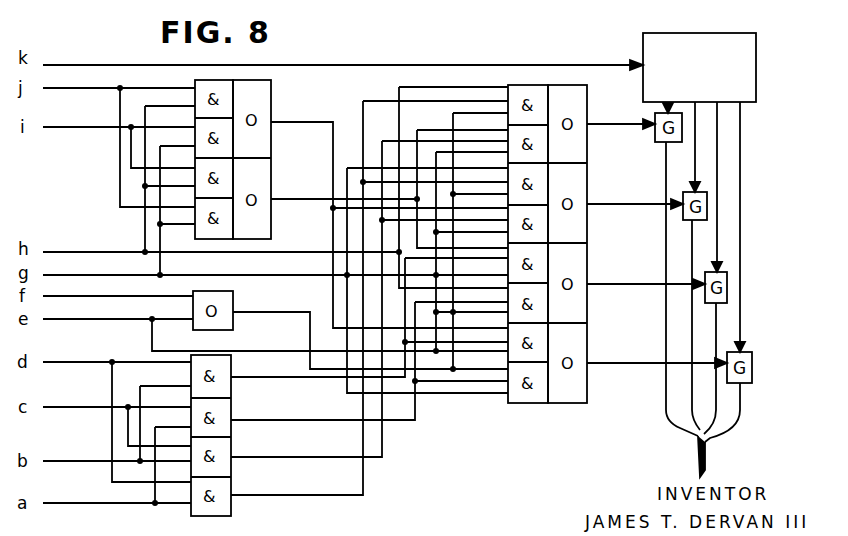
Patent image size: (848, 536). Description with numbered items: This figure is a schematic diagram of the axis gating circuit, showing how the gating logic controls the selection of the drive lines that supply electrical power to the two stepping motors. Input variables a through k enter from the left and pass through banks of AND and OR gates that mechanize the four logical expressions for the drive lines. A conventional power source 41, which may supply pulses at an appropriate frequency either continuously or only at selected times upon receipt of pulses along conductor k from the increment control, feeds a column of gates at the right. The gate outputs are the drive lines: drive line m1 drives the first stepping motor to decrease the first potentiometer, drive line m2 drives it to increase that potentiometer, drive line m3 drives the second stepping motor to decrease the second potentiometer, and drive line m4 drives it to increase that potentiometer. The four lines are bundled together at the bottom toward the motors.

The power source 41 is at (643, 38).
The drive line M1 m1 is at (739, 325).
The drive line M2 m2 is at (714, 310).
The drive line M3 m3 is at (692, 318).
The drive line M4 m4 is at (666, 255).